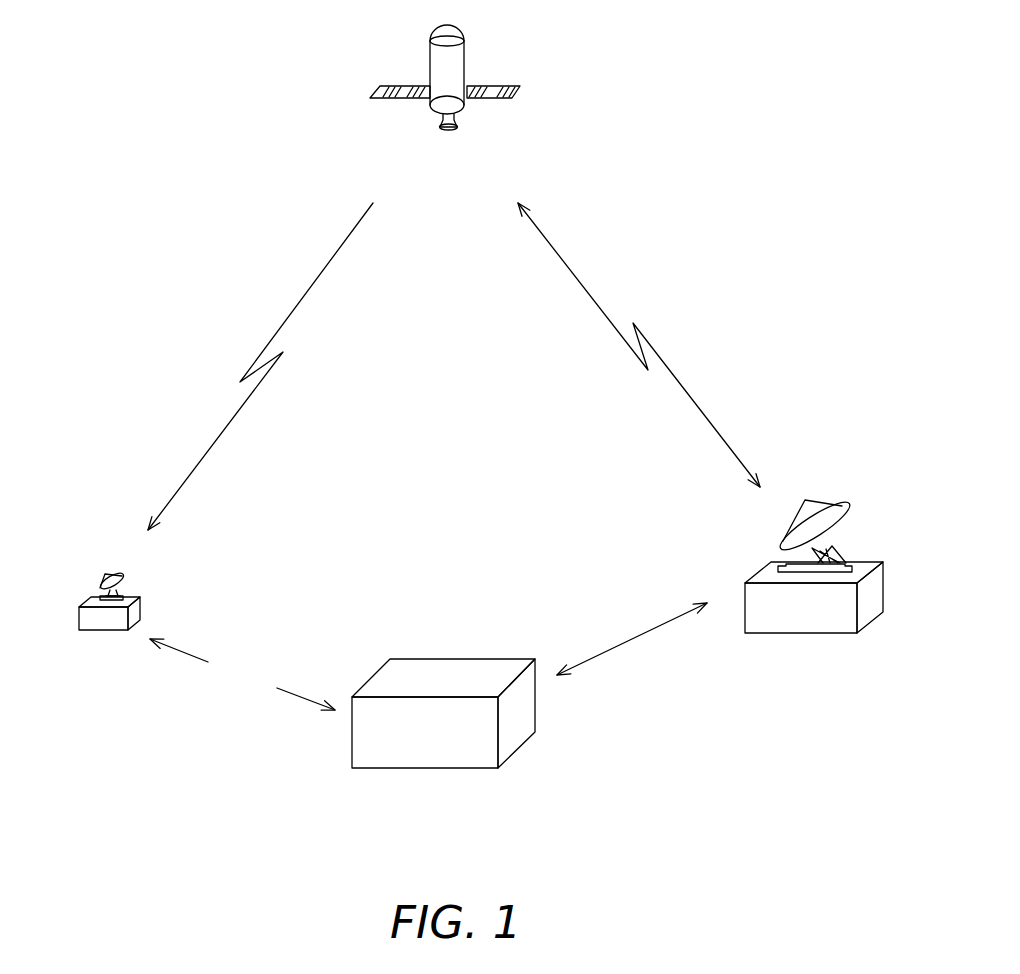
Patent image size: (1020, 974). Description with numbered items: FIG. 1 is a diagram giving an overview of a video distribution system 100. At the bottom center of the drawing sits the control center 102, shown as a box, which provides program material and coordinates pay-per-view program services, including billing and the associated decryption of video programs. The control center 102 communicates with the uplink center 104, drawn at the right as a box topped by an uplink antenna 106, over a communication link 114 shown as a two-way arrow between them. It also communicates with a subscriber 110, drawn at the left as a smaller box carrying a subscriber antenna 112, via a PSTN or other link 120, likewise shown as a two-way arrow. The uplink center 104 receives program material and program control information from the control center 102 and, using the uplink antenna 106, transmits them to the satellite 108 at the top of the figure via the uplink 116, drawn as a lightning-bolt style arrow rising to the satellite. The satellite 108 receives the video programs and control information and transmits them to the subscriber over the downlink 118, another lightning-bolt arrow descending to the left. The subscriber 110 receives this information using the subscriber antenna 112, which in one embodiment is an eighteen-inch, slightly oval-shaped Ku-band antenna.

The video distribution system 100 is at (750, 213).
The control center 102 is at (520, 752).
The uplink center 104 is at (795, 636).
The uplink antenna 106 is at (850, 512).
The satellite 108 is at (492, 98).
The subscriber 110 is at (150, 603).
The subscriber antenna 112 is at (108, 572).
The communication link 114 is at (627, 640).
The uplink 116 is at (683, 387).
The downlink 118 is at (313, 287).
The PSTN or other link 120 is at (277, 648).